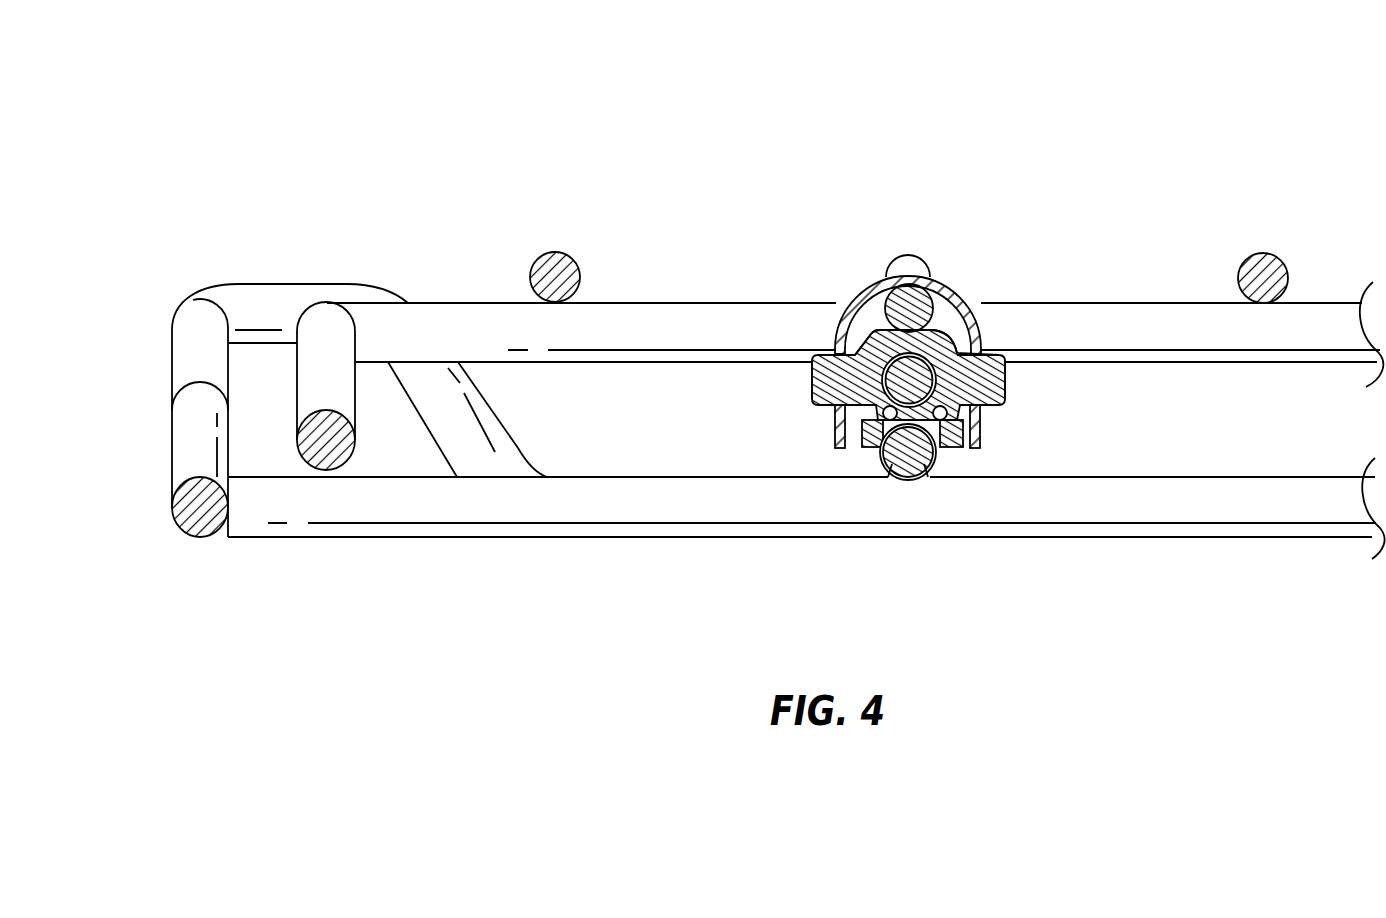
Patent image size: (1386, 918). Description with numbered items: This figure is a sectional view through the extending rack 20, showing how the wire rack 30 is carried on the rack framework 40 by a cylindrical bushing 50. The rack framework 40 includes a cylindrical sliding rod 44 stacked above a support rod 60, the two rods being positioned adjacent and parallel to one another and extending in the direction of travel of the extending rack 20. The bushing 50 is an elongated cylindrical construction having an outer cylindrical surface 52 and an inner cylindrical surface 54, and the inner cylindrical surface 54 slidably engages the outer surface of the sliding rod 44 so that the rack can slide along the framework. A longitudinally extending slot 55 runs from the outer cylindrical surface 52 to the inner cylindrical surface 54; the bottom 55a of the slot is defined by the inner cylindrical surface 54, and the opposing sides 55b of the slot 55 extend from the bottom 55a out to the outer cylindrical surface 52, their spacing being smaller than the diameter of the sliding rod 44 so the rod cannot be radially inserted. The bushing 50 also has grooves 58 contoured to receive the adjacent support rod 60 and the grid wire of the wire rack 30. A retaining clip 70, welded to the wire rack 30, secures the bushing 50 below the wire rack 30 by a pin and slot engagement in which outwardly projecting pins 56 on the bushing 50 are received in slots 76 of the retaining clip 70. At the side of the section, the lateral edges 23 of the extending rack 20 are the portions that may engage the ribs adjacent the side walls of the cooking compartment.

The extending rack 20 is at (223, 177).
The lateral edges 23 is at (172, 382).
The wire rack 30 is at (283, 443).
The rack framework 40 is at (187, 290).
The sliding rod 44 is at (953, 443).
The bushing 50 is at (927, 367).
The outer cylindrical surface 52 is at (950, 338).
The inner cylindrical surface 54 is at (936, 384).
The longitudinally extending slot 55 is at (882, 437).
The bottom of the slot 55a is at (1005, 355).
The opposing sides of the slot 55b is at (843, 408).
The outwardly projecting pins 56 is at (828, 390).
The grooves 58 is at (922, 318).
The support rod 60 is at (913, 470).
The retaining clip 70 is at (952, 359).
The slots of the retaining clip 76 is at (835, 352).